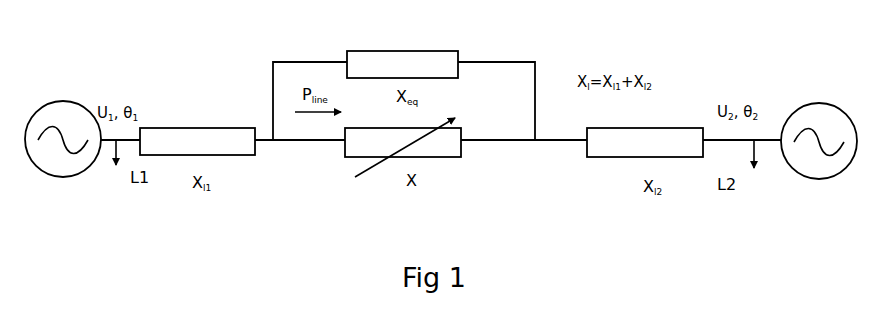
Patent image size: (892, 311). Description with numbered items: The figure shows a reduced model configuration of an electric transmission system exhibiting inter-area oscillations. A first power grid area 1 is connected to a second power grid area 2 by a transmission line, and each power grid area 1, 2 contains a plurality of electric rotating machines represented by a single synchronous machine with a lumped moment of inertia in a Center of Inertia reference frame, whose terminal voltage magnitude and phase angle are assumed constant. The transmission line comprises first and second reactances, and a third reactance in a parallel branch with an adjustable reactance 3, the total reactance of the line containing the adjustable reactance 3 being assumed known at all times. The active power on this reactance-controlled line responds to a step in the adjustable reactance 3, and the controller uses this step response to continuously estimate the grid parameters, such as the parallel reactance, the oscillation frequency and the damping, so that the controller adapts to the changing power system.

The first power grid area 1 is at (68, 101).
The second power grid area 2 is at (810, 104).
The adjustable reactance 3 is at (432, 158).